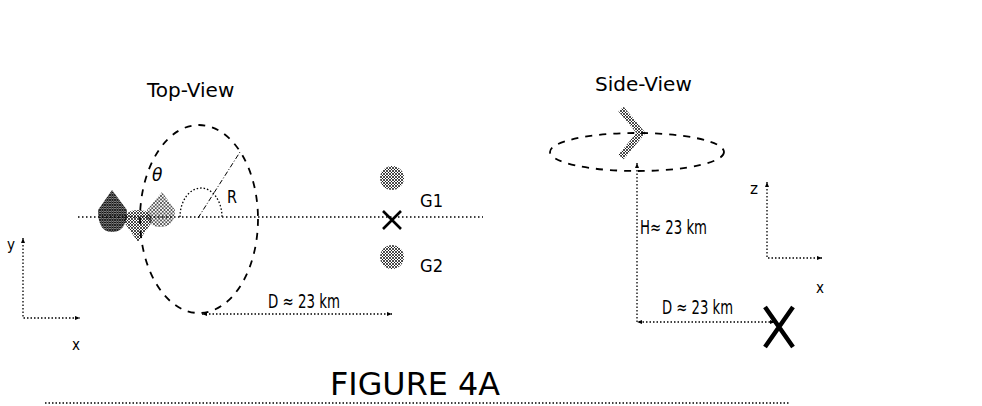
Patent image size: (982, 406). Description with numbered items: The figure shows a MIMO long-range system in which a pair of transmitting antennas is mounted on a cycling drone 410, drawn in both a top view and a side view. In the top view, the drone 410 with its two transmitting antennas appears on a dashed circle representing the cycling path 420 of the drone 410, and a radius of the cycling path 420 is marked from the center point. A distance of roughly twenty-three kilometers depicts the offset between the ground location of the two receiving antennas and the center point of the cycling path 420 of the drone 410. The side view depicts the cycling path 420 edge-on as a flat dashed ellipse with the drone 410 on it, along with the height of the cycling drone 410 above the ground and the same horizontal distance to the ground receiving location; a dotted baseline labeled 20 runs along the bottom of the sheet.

The cycling drone 410 is at (140, 207).
The cycling path 420 is at (563, 130).
The ground / baseline 20 is at (400, 401).